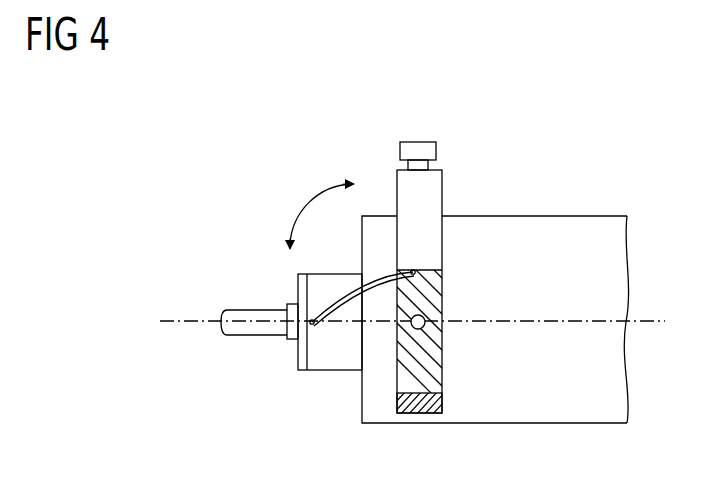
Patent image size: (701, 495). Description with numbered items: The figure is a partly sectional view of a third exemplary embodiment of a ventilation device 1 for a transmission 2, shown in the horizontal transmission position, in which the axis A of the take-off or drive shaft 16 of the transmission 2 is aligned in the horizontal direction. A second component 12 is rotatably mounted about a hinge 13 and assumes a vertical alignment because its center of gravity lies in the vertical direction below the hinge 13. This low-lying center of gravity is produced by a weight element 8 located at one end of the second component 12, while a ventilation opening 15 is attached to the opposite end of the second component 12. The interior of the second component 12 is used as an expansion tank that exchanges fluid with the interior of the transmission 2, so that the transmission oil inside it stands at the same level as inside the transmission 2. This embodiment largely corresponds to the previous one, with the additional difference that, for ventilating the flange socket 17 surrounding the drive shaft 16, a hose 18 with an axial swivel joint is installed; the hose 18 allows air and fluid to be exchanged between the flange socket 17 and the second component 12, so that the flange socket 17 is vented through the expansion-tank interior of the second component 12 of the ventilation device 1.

The ventilation device 1 is at (452, 200).
The transmission 2 is at (562, 216).
The weight element 8 is at (443, 396).
The second component 12 is at (442, 250).
The hinge 13 is at (424, 327).
The ventilation opening 15 is at (417, 141).
The take-off or drive shaft 16 is at (260, 309).
The flange socket 17 is at (337, 372).
The hose 18 is at (333, 295).
The axis A is at (182, 320).